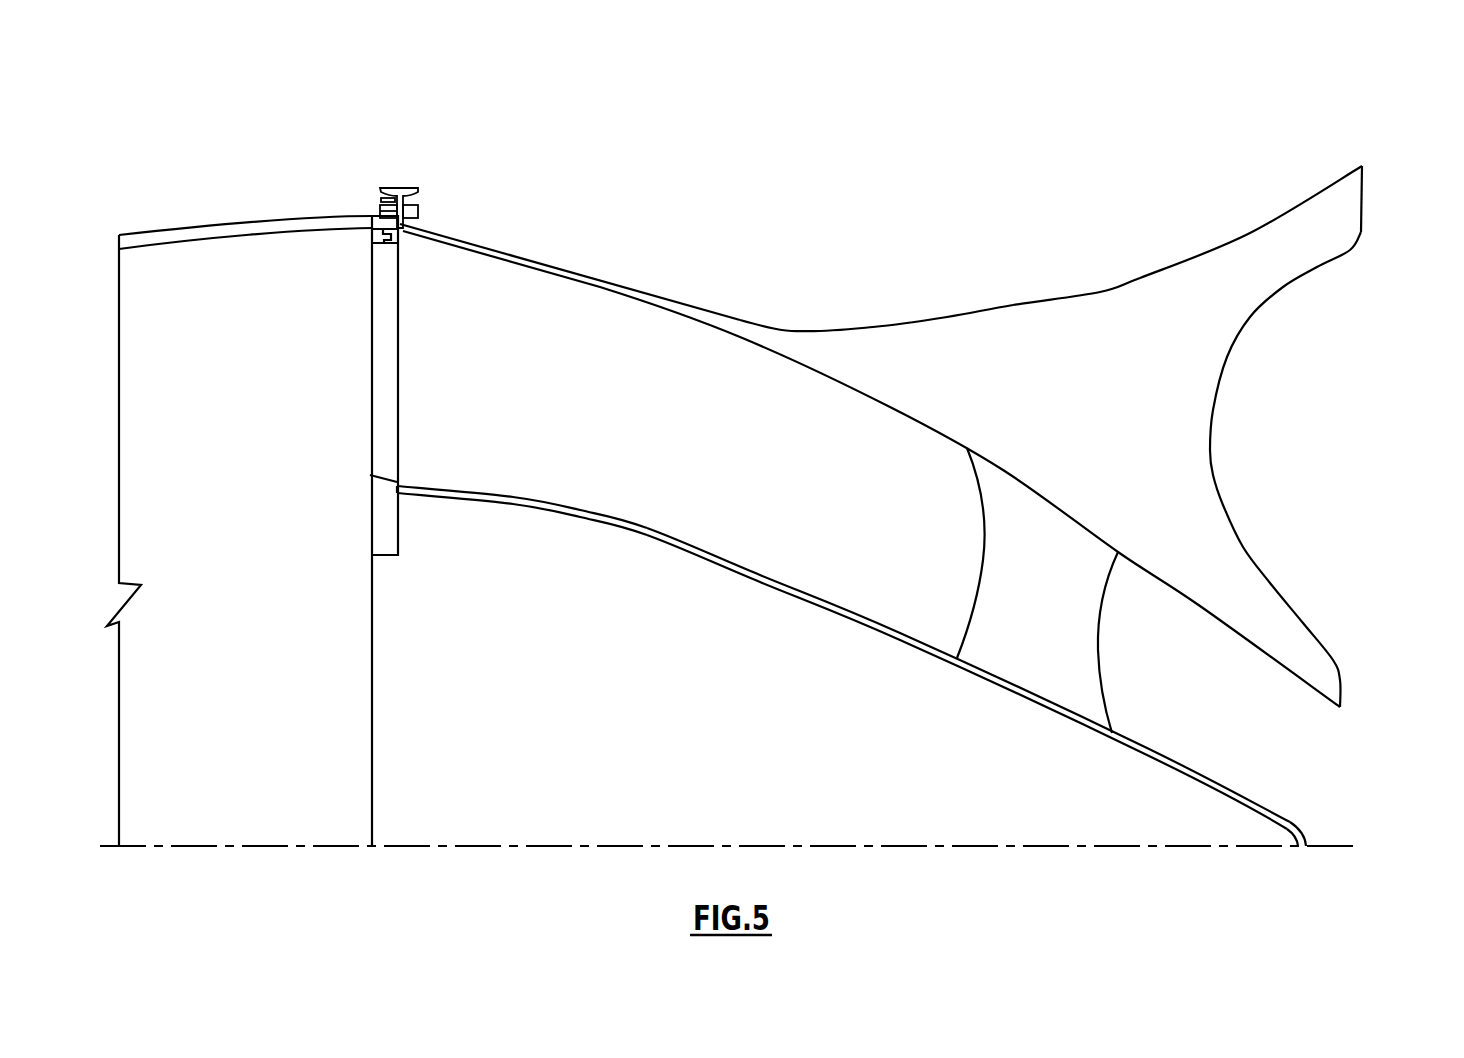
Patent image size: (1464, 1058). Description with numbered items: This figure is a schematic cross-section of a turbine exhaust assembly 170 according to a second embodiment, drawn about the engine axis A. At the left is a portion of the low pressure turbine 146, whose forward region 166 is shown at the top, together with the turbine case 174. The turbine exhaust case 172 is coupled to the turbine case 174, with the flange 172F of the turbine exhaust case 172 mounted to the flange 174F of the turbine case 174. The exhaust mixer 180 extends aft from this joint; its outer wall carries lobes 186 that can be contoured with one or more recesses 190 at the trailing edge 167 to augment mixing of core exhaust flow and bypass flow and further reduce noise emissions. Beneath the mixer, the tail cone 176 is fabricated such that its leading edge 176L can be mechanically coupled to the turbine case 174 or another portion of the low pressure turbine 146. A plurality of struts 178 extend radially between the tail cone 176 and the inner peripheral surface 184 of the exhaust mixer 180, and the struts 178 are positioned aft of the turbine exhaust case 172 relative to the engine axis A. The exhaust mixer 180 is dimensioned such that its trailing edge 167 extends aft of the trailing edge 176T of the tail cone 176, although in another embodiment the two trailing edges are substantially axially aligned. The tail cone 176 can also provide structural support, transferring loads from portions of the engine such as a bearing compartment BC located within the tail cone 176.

The turbine exhaust assembly 170 is at (149, 126).
The low pressure turbine 146 is at (256, 535).
The casing flange / forward end 166 is at (206, 222).
The turbine case 174 is at (374, 216).
The flange of turbine case 174F is at (390, 188).
The flange of turbine exhaust case 172F is at (408, 190).
The turbine exhaust case 172 is at (592, 275).
The inner peripheral surface of exhaust mixer 184 is at (893, 405).
The exhaust mixer 180 is at (950, 318).
The lobes 186 is at (1075, 298).
The trailing edge of exhaust mixer 167 is at (1366, 215).
The recesses 190 is at (1270, 585).
The struts 178 is at (1078, 653).
The tail cone 176 is at (1175, 760).
The leading edge of tail cone 176L is at (420, 483).
The trailing edge of tail cone 176T is at (1303, 830).
The engine axis A is at (1342, 846).
The bearing compartment BC is at (685, 746).